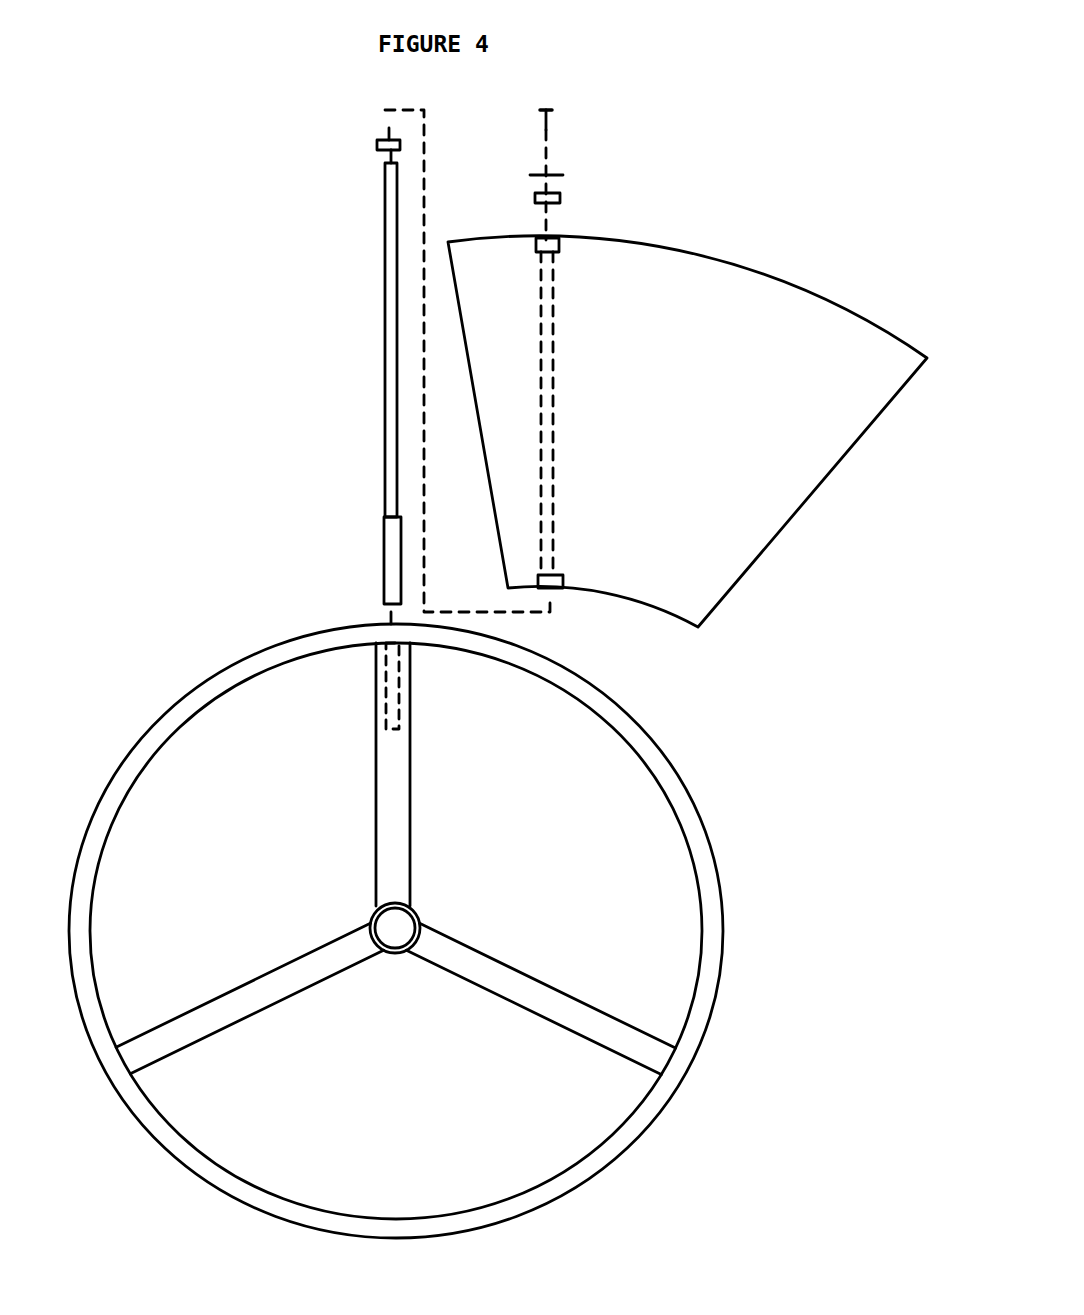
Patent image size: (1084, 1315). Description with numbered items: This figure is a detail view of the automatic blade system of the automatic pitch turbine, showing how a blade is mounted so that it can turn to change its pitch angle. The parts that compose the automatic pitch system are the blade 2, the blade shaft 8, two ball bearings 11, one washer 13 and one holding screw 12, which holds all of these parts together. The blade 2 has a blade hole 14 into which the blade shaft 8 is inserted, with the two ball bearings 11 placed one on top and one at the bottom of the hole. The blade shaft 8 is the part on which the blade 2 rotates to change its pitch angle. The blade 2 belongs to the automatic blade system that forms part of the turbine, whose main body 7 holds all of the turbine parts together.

The blade 2 is at (808, 508).
The main body 7 is at (195, 680).
The blade shaft 8 is at (380, 363).
The ball bearing 11 is at (378, 145).
The holding screw 12 is at (553, 118).
The washer 13 is at (568, 172).
The blade hole 14 is at (417, 912).